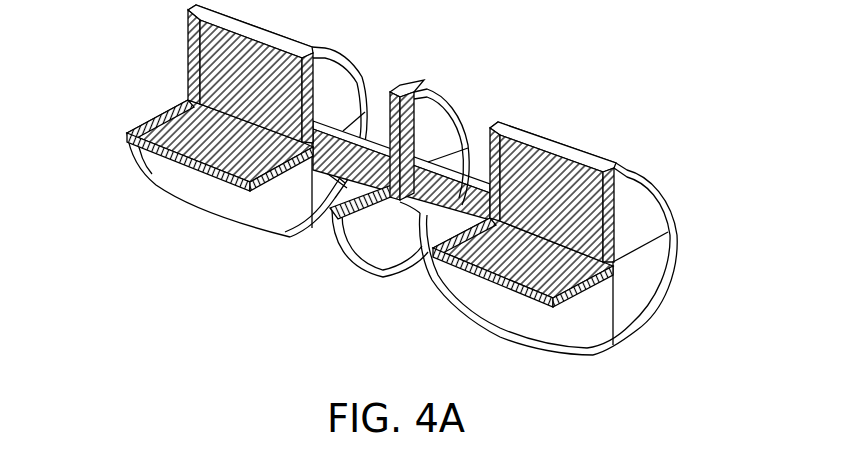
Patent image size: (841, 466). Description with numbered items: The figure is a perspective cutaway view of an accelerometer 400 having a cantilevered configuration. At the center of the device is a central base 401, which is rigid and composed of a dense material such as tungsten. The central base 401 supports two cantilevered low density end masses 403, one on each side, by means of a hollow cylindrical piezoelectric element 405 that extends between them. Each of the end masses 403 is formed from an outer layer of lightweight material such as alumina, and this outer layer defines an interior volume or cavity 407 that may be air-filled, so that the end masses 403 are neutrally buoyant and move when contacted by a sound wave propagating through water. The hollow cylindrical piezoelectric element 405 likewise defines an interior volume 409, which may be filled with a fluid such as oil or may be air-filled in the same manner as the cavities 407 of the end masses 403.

The accelerometer 400 is at (116, 67).
The central base 401 is at (360, 268).
The end masses 403 is at (187, 187).
The hollow cylindrical piezoelectric element 405 is at (378, 143).
The cavity 407 is at (157, 128).
The interior volume 409 is at (422, 216).